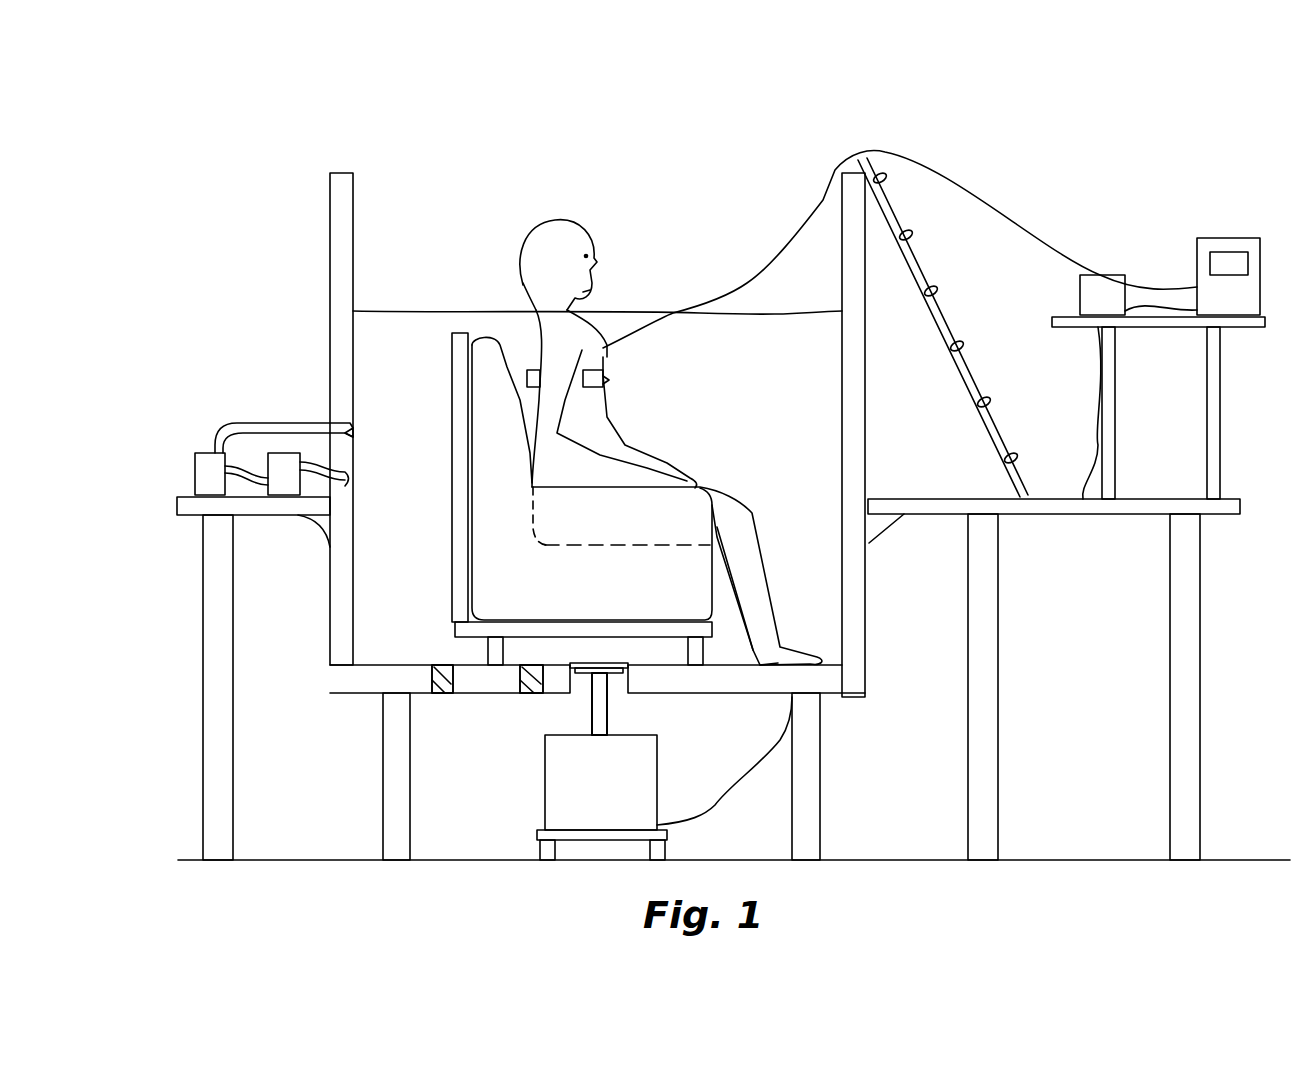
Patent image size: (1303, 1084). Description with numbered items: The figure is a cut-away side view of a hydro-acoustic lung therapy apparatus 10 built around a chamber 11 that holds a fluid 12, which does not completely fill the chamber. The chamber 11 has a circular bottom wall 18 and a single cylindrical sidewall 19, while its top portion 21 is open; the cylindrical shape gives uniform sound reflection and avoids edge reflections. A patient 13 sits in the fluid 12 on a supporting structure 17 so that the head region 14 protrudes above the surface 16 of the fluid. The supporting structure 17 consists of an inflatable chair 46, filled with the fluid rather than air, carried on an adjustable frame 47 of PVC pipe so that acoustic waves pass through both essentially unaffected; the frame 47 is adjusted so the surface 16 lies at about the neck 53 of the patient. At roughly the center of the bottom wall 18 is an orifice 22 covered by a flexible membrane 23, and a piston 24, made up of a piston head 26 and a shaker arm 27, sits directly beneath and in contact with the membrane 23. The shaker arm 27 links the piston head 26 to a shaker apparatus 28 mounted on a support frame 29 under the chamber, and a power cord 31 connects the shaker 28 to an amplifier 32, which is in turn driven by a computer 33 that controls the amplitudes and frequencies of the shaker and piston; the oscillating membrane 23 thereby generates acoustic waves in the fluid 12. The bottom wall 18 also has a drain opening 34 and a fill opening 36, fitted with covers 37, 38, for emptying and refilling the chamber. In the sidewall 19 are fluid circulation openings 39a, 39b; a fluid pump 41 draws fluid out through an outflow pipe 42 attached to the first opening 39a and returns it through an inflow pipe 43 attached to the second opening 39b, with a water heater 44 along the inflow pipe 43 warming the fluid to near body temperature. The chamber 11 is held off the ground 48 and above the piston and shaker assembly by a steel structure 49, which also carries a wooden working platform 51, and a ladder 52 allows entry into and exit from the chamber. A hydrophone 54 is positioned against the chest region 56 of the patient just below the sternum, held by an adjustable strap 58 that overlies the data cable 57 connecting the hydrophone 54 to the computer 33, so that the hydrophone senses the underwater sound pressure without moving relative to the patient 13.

The hydro-acoustic lung therapy apparatus 10 is at (1024, 158).
The chamber 11 is at (593, 415).
The fluid 12 is at (597, 378).
The patient 13 is at (640, 416).
The head region 14 is at (566, 233).
The surface of the fluid 16 is at (661, 310).
The supporting structure 17 is at (541, 499).
The bottom wall 18 is at (740, 690).
The sidewall 19 is at (855, 347).
The top portion 21 is at (355, 173).
The orifice 22 is at (620, 690).
The flexible membrane 23 is at (616, 661).
The piston 24 is at (615, 707).
The piston head 26 is at (585, 675).
The shaker arm 27 is at (592, 715).
The shaker apparatus 28 is at (613, 792).
The support frame 29 is at (538, 832).
The power cord 31 is at (716, 802).
The amplifier 32 is at (1116, 309).
The computer 33 is at (1241, 309).
The drain opening 34 is at (520, 680).
The fill opening 36 is at (440, 692).
The cover 37 is at (530, 662).
The cover 38 is at (436, 660).
The first fluid circulation opening 39a is at (346, 477).
The second fluid circulation opening 39b is at (346, 423).
The fluid pump 41 is at (296, 487).
The outflow pipe 42 is at (320, 478).
The inflow pipe 43 is at (287, 420).
The water heater 44 is at (223, 487).
The inflatable chair 46 is at (592, 478).
The adjustable frame 47 is at (455, 535).
The ground 48 is at (898, 892).
The structure 49 is at (815, 750).
The working platform 51 is at (1040, 510).
The ladder 52 is at (910, 266).
The neck 53 is at (586, 300).
The hydrophone 54 is at (611, 380).
The chest region 56 is at (597, 340).
The data cable 57 is at (672, 322).
The strap 58 is at (527, 372).